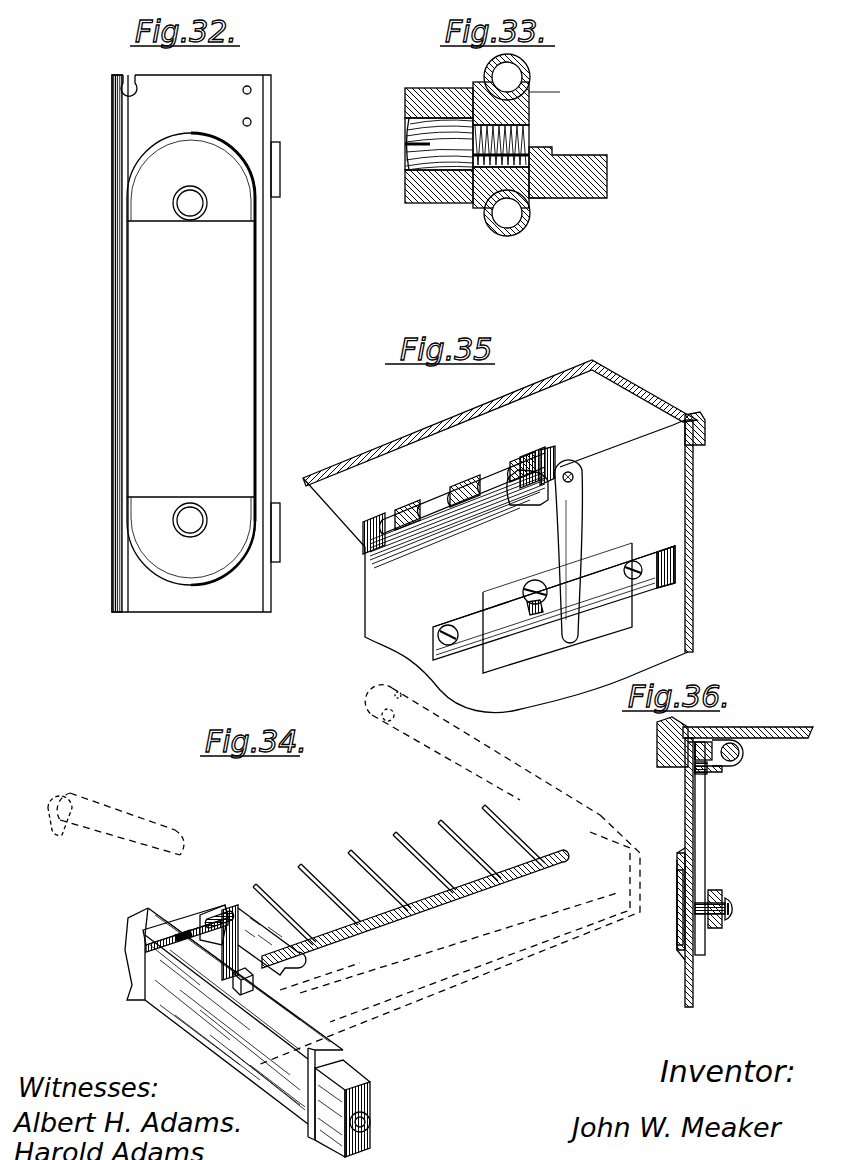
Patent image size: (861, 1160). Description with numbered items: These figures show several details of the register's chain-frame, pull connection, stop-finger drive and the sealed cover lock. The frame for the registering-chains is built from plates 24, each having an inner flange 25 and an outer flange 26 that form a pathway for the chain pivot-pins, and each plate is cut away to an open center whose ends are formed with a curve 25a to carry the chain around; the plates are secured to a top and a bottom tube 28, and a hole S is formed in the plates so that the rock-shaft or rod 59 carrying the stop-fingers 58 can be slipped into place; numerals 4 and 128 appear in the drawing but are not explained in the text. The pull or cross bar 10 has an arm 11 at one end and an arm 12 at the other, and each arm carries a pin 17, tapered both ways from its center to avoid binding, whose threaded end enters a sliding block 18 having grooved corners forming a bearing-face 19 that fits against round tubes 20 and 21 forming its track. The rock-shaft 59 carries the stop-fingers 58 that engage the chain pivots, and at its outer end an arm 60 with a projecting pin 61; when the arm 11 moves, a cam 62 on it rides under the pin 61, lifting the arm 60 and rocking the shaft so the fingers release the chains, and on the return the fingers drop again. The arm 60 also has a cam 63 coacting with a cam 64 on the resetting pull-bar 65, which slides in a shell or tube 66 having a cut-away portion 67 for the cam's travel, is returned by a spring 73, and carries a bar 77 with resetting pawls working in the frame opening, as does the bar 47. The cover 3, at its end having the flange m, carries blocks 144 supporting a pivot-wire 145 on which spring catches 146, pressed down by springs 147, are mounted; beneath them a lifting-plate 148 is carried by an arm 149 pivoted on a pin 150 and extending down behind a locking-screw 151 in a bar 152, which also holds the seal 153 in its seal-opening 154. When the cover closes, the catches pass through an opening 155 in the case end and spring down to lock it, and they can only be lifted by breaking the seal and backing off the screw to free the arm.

In FIG. 35, the cover or face-plate 3 is at (598, 370).
In FIG. 36, the cover or face-plate 3 is at (798, 717).
In FIG. 32, the notch 4 is at (127, 62).
In FIG. 32, the hole in the plates S is at (122, 93).
In FIG. 34, the pull or cross bar 10 is at (449, 940).
In FIG. 33, the arm 11 is at (428, 145).
In FIG. 34, the arm 11 is at (120, 824).
In FIG. 34, the arm 12 is at (482, 750).
In FIG. 33, the pin 17 is at (405, 130).
In FIG. 34, the pin 17 is at (62, 838).
In FIG. 33, the sliding block 18 is at (530, 108).
In FIG. 33, the bearing-face 19 is at (531, 92).
In FIG. 33, the round tube 20 is at (524, 72).
In FIG. 33, the round tube 21 is at (518, 226).
In FIG. 32, the plate 24 is at (191, 343).
In FIG. 32, the inner flange 25 is at (262, 330).
In FIG. 32, the curve 25a is at (250, 148).
In FIG. 32, the outer flange 26 is at (265, 340).
In FIG. 32, the top and bottom tube 28 is at (190, 361).
In FIG. 33, the bar 47 is at (568, 172).
In FIG. 34, the stop-finger 58 is at (399, 872).
In FIG. 34, the rock-shaft or rod 59 is at (360, 935).
In FIG. 34, the arm 60 is at (240, 908).
In FIG. 34, the pin 61 is at (214, 917).
In FIG. 34, the cam 62 is at (205, 925).
In FIG. 34, the cam 63 is at (183, 945).
In FIG. 34, the cam 64 is at (238, 983).
In FIG. 34, the pull-bar 65 is at (342, 1108).
In FIG. 34, the shell or tube 66 is at (234, 1024).
In FIG. 34, the cut-away portion 67 is at (143, 940).
In FIG. 34, the spring 73 is at (371, 1122).
In FIG. 34, the bar 77 is at (185, 935).
In FIG. 32, the tab 128 is at (294, 352).
In FIG. 35, the ears or blocks 144 is at (375, 516).
In FIG. 36, the ears or blocks 144 is at (742, 749).
In FIG. 35, the pivot-wire 145 is at (550, 460).
In FIG. 36, the pivot-wire 145 is at (742, 760).
In FIG. 35, the pawls or catches 146 is at (428, 497).
In FIG. 36, the pawls or catches 146 is at (724, 770).
In FIG. 35, the spring 147 is at (400, 500).
In FIG. 35, the lifting-plate 148 is at (462, 540).
In FIG. 36, the lifting-plate 148 is at (712, 768).
In FIG. 35, the arm 149 is at (580, 532).
In FIG. 36, the arm 149 is at (705, 845).
In FIG. 35, the pin 150 is at (575, 477).
In FIG. 35, the locking-screw 151 is at (532, 584).
In FIG. 36, the locking-screw 151 is at (732, 902).
In FIG. 35, the bar 152 is at (554, 603).
In FIG. 36, the bar 152 is at (715, 930).
In FIG. 35, the seal 153 is at (557, 608).
In FIG. 36, the seal 153 is at (678, 912).
In FIG. 36, the seal-opening 154 is at (675, 935).
In FIG. 36, the opening 155 is at (683, 767).
In FIG. 35, the flange m is at (705, 440).
In FIG. 36, the flange m is at (657, 757).